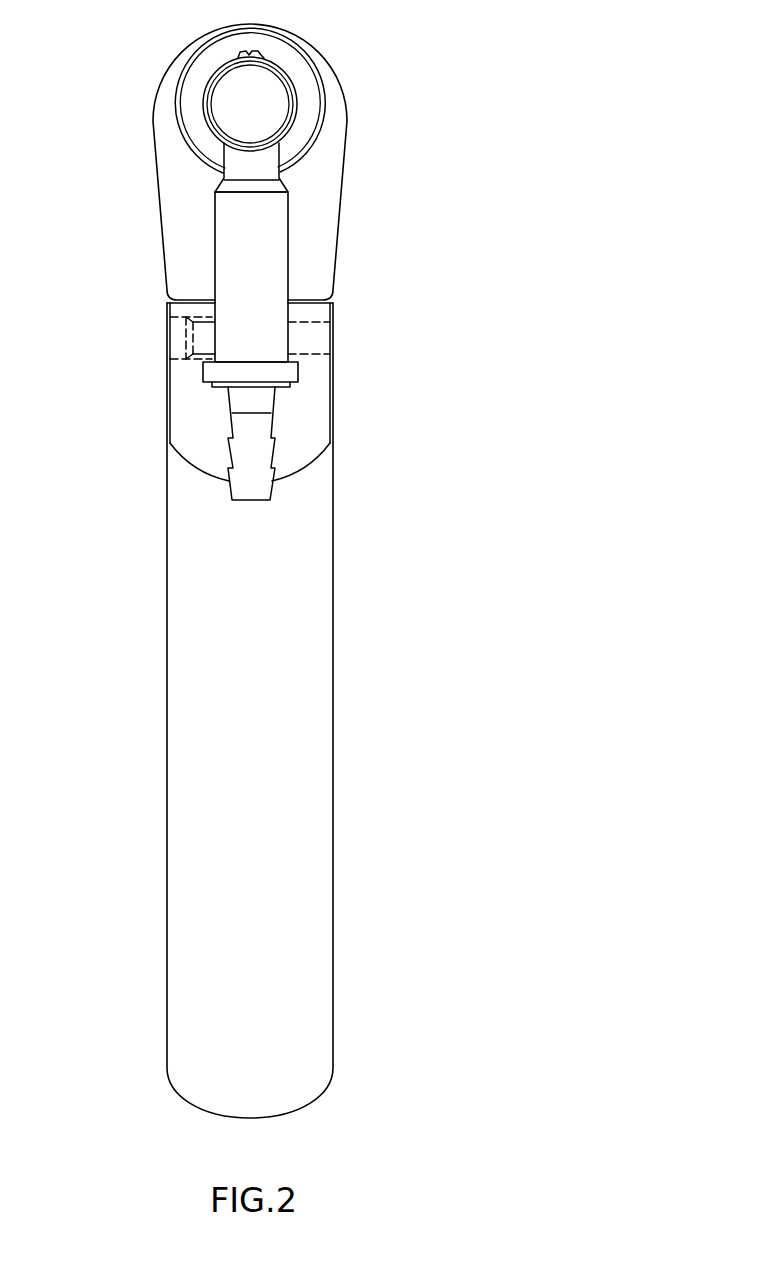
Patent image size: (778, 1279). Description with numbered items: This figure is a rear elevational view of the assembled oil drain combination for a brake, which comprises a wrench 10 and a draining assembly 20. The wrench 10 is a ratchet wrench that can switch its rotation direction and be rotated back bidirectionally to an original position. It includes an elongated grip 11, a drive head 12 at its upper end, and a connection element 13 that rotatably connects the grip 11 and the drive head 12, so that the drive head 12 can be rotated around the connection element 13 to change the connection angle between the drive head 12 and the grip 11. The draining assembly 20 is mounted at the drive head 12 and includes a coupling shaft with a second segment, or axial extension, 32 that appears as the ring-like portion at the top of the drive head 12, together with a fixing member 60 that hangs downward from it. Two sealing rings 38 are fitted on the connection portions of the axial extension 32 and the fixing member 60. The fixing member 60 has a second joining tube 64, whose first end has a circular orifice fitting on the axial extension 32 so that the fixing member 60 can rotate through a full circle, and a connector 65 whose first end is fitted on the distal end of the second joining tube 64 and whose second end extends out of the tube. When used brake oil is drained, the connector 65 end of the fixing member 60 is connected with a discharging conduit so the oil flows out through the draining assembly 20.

The wrench 10 is at (160, 530).
The grip 11 is at (317, 653).
The drive head 12 is at (337, 213).
The connection element 13 is at (188, 363).
The draining assembly 20 is at (175, 118).
The second segment (axial extension) of the coupling shaft 32 is at (263, 108).
The sealing ring 38 is at (238, 56).
The fixing member 60 is at (213, 252).
The second joining tube 64 is at (273, 265).
The connector 65 is at (265, 402).